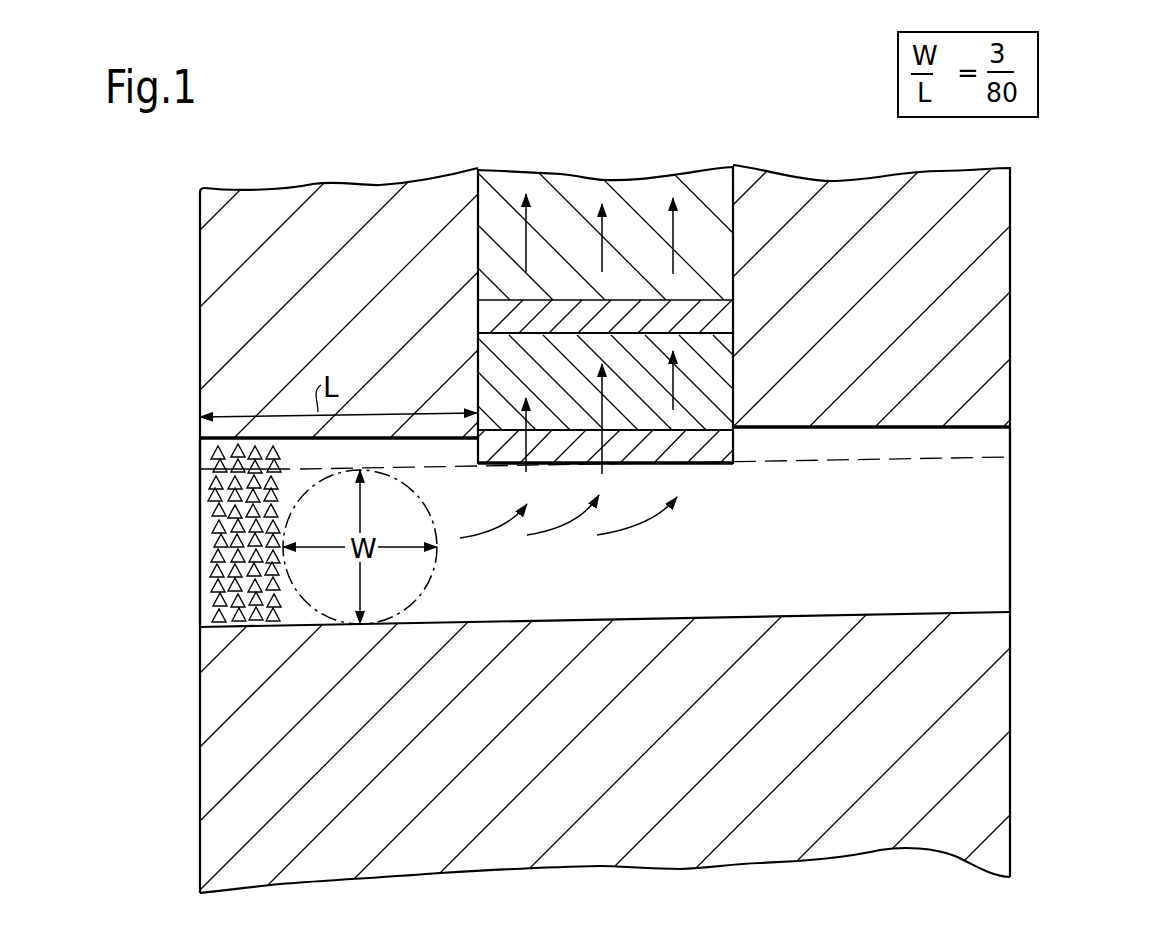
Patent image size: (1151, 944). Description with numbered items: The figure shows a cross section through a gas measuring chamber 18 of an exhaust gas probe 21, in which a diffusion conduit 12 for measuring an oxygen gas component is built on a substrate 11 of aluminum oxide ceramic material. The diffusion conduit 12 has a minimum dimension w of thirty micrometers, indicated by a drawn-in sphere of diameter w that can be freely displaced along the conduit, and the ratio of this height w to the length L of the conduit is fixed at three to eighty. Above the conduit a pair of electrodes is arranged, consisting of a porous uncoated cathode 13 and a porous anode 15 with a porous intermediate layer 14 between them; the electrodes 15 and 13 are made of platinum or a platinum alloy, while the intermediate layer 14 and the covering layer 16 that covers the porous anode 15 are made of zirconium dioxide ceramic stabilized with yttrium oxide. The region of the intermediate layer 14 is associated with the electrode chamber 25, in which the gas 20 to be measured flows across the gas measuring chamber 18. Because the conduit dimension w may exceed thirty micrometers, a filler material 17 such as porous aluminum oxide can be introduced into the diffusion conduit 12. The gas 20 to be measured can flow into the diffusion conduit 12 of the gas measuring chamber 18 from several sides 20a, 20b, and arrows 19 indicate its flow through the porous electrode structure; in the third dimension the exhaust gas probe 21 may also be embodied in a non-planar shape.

The substrate 11 is at (218, 358).
The diffusion conduit 12 is at (973, 550).
The porous uncoated cathode 13 is at (733, 443).
The porous intermediate layer 14 is at (733, 377).
The electrode chamber 25 is at (800, 404).
The porous anode 15 is at (733, 313).
The covering layer 16 is at (733, 258).
The filler material 17 is at (205, 607).
The gas measuring chamber 18 is at (114, 508).
The flow arrows 19 is at (617, 455).
The gas to be measured 20 is at (205, 553).
The side of gas inflow 20a is at (189, 575).
The side of gas inflow 20b is at (1018, 586).
The exhaust gas probe 21 is at (188, 240).